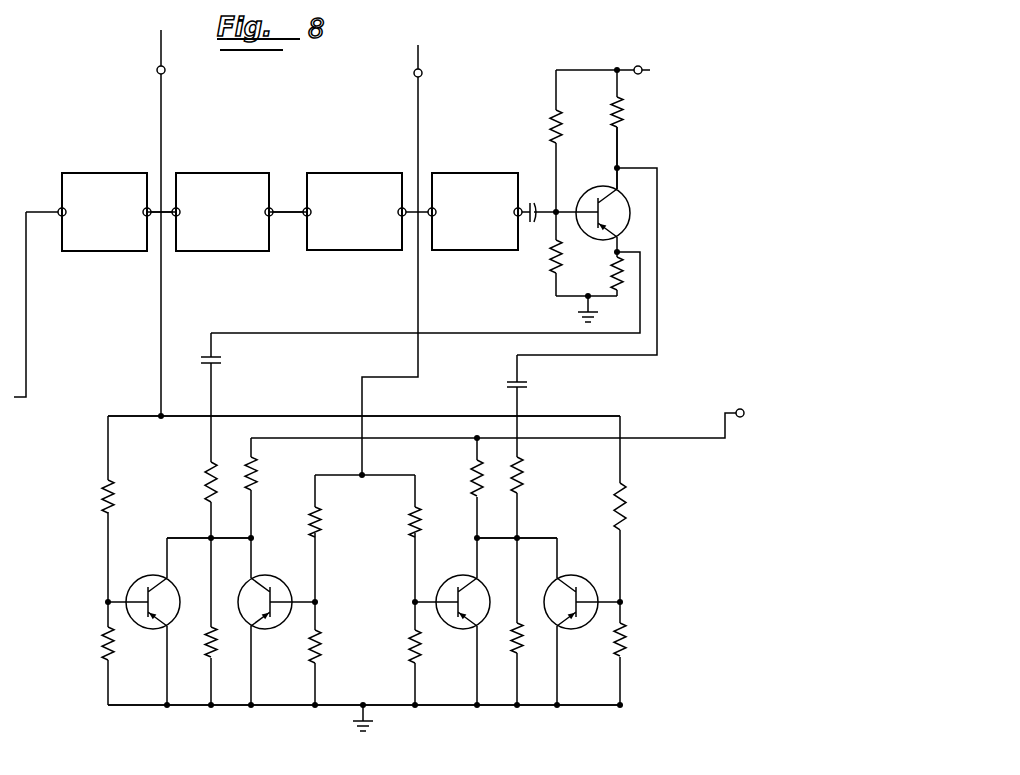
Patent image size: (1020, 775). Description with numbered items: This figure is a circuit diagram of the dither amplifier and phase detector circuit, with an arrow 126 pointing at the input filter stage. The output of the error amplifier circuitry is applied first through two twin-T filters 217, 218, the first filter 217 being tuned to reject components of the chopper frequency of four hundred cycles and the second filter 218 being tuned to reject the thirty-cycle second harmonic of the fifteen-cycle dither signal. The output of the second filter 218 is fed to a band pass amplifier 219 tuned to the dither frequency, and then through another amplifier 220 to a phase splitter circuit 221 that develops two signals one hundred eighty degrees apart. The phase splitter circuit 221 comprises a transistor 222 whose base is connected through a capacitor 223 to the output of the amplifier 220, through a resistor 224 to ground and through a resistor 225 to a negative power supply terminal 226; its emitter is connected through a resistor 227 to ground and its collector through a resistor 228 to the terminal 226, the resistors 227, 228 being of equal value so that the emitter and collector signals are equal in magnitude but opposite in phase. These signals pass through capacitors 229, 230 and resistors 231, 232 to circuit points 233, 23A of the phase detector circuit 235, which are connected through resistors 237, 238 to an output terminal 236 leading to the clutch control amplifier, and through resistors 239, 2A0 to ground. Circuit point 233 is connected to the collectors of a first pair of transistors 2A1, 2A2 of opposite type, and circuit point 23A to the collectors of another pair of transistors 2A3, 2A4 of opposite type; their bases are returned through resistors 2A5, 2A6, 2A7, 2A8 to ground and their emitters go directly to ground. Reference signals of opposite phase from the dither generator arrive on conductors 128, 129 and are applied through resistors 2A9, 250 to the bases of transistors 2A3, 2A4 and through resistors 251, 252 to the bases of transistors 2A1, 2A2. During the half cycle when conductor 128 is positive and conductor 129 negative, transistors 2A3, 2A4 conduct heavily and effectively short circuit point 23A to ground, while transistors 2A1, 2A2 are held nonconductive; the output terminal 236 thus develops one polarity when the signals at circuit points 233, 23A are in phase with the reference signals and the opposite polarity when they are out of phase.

The filter network 126 is at (110, 170).
The conductor 128 is at (161, 66).
The conductor 129 is at (422, 73).
The twin-T filter 217 is at (114, 173).
The twin-T filter 218 is at (225, 173).
The band pass amplifier 219 is at (343, 173).
The amplifier 220 is at (468, 173).
The phase splitter circuit 221 is at (635, 157).
The transistor 222 is at (637, 212).
The capacitor 223 is at (538, 222).
The resistor 224 is at (550, 268).
The resistor 225 is at (549, 122).
The negative power supply terminal 226 is at (642, 70).
The resistor 227 is at (612, 274).
The resistor 228 is at (622, 122).
The capacitor 229 is at (213, 352).
The capacitor 230 is at (519, 377).
The resistor 231 is at (206, 477).
The resistor 232 is at (521, 478).
The circuit point 233 is at (209, 536).
The phase detector circuit 235 is at (623, 401).
The output terminal 236 is at (744, 409).
The resistor 237 is at (253, 471).
The resistor 238 is at (474, 470).
The resistor 239 is at (206, 642).
The resistor 250 is at (419, 528).
The resistor 251 is at (103, 490).
The resistor 252 is at (320, 528).
The circuit point 23A is at (557, 537).
The resistor 2A0 is at (524, 642).
The transistor 2A1 is at (176, 591).
The transistor 2A2 is at (266, 578).
The transistor 2A3 is at (466, 577).
The transistor 2A4 is at (580, 579).
The resistor 2A5 is at (103, 649).
The resistor 2A6 is at (318, 650).
The resistor 2A7 is at (418, 652).
The resistor 2A8 is at (625, 648).
The resistor 2A9 is at (625, 516).